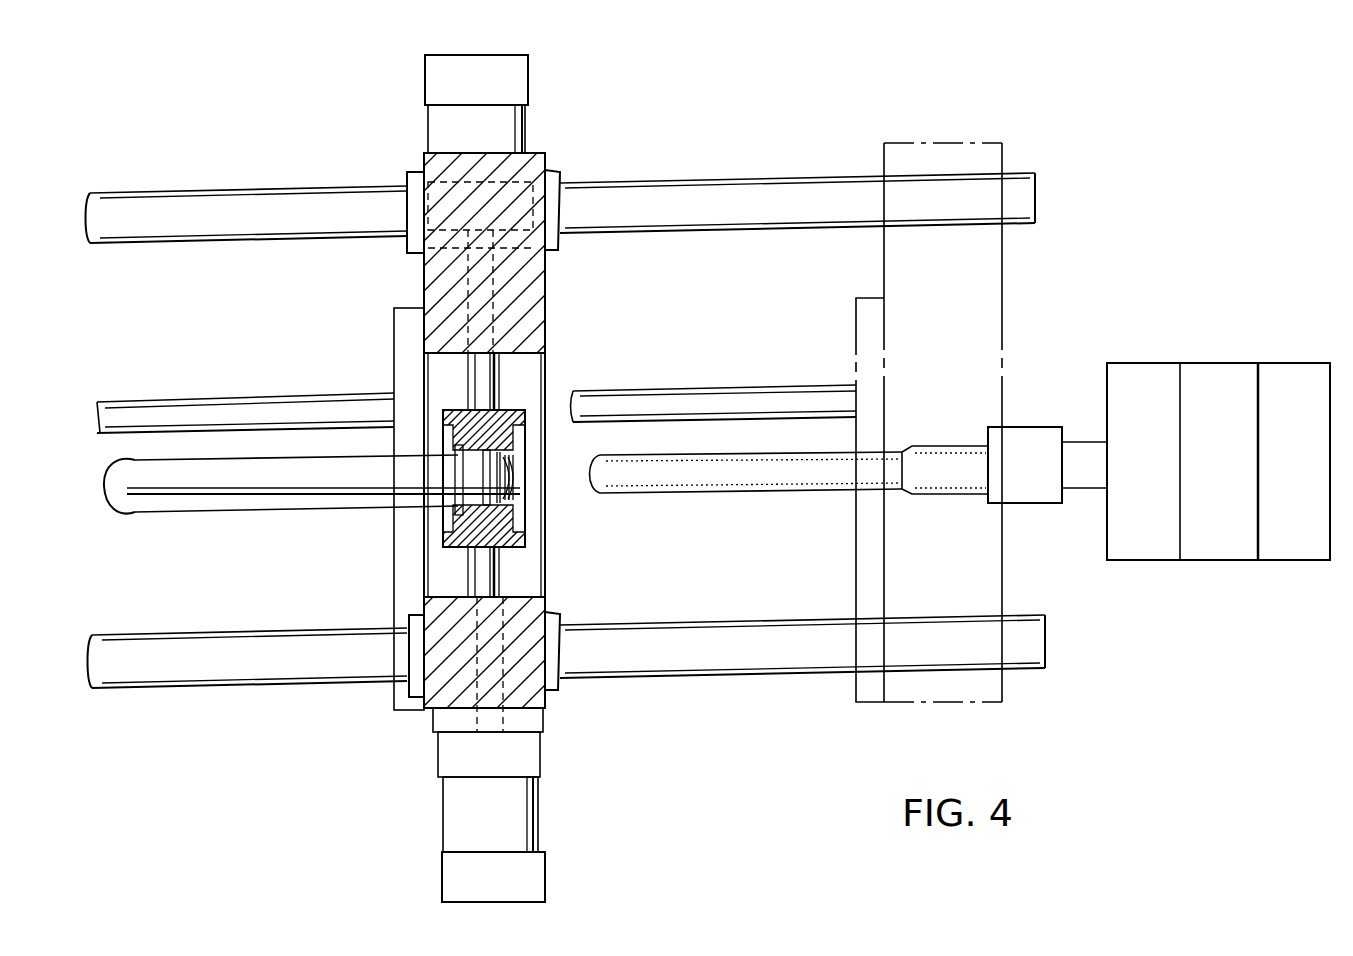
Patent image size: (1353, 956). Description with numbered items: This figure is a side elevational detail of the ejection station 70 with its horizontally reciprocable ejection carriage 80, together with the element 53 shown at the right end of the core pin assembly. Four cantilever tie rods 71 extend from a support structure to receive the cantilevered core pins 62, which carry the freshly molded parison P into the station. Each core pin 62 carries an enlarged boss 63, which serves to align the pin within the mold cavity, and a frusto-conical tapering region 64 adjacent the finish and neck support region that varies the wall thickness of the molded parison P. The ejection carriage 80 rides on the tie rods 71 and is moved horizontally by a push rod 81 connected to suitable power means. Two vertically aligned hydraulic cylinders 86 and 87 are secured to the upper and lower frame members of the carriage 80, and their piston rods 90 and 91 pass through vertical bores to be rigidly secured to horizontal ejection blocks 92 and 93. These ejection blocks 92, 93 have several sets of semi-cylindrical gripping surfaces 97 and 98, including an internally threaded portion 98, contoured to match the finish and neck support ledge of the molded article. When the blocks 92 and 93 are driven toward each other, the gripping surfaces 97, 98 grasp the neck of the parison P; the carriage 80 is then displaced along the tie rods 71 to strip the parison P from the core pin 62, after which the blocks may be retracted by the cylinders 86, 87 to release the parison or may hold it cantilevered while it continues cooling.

The drive unit 53 is at (1153, 548).
The core pins 62 is at (698, 486).
The enlarged boss 63 is at (1038, 472).
The frusto-conical tapering region 64 is at (906, 478).
The ejection station 70 is at (1017, 126).
The tie rods 71 is at (1036, 192).
The ejection carriage 80 is at (562, 297).
The push rod 81 is at (167, 408).
The hydraulic cylinder 86 is at (510, 123).
The hydraulic cylinder 87 is at (522, 810).
The piston rod 90 is at (480, 372).
The piston rod 91 is at (487, 571).
The ejection block 92 is at (462, 418).
The ejection block 93 is at (458, 540).
The gripping surfaces 97 is at (500, 468).
The gripping surfaces 98 is at (510, 492).
The parison P is at (258, 513).